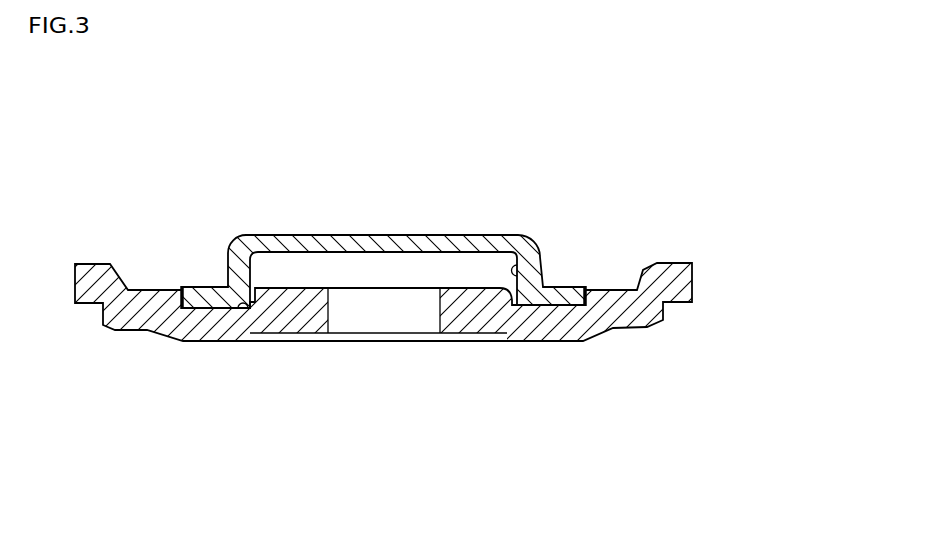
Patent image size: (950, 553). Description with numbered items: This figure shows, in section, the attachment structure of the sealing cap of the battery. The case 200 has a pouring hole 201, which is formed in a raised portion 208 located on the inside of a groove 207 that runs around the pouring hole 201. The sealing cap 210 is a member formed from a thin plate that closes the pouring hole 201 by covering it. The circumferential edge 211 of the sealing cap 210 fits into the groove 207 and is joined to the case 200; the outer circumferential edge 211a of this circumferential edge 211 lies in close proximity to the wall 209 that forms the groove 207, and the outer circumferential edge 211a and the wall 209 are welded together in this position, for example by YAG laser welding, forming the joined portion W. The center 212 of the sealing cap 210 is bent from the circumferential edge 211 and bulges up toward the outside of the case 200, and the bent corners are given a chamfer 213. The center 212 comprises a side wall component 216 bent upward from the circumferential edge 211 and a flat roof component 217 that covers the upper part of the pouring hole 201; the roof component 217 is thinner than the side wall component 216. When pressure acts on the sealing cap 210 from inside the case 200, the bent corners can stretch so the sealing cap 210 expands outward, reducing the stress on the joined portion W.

The case 200 is at (678, 263).
The pouring hole 201 is at (377, 297).
The groove 207 is at (243, 304).
The raised portion 208 is at (323, 288).
The wall 209 is at (188, 287).
The sealing cap 210 is at (536, 228).
The circumferential edge 211 is at (208, 287).
The outer circumferential edge 211a is at (168, 291).
The center 212 is at (493, 235).
The chamfer 213 is at (247, 300).
The side wall component 216 is at (520, 274).
The roof component 217 is at (433, 248).
The joined portion W is at (181, 286).